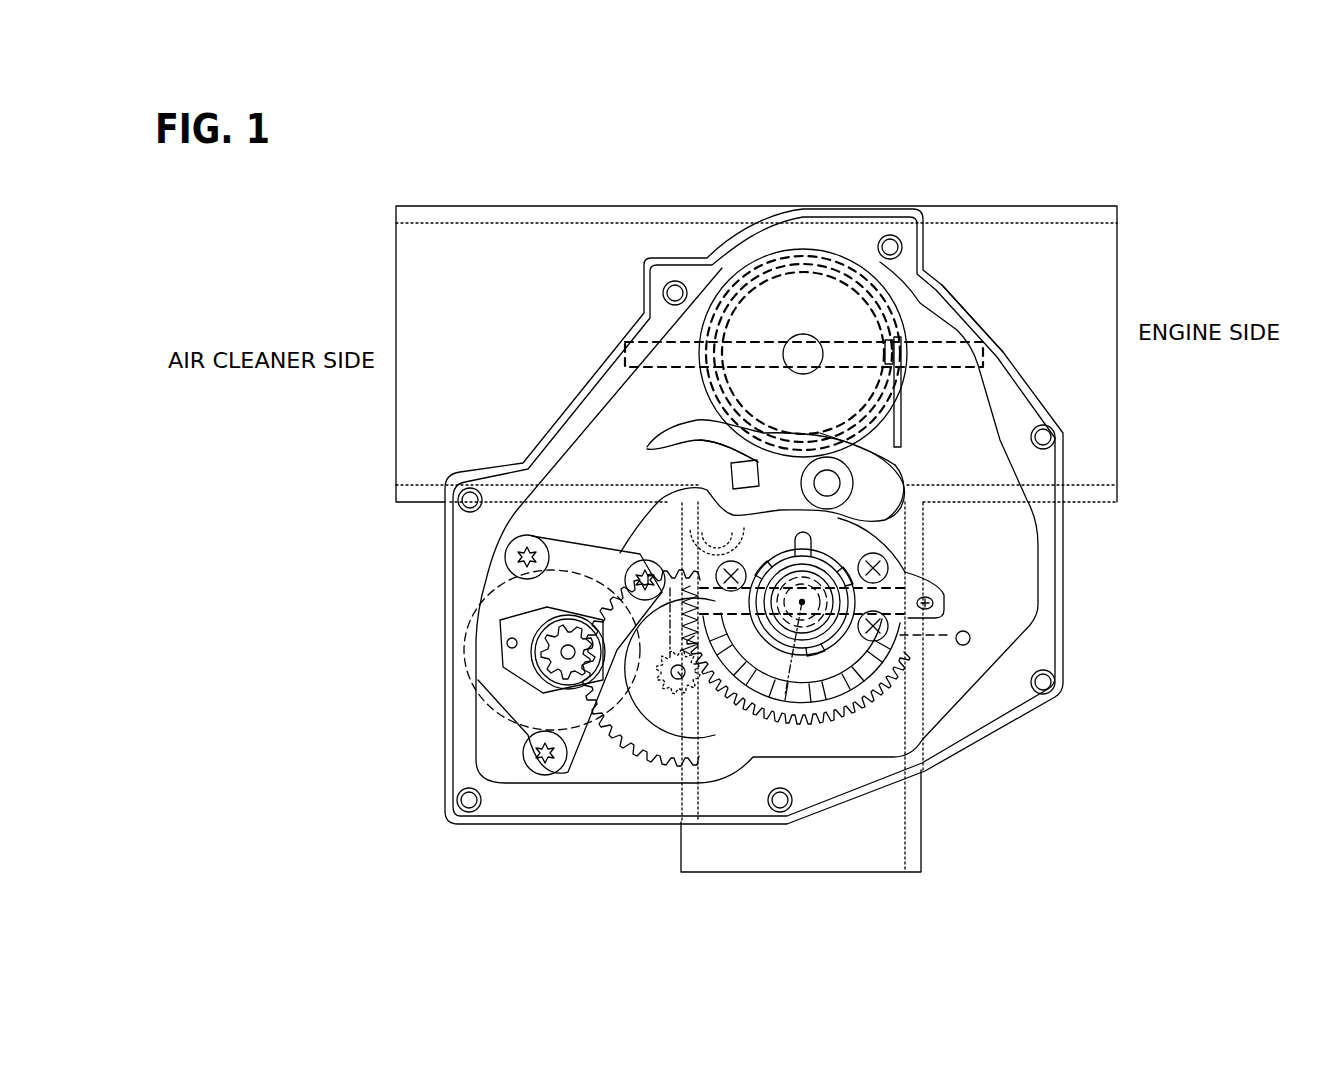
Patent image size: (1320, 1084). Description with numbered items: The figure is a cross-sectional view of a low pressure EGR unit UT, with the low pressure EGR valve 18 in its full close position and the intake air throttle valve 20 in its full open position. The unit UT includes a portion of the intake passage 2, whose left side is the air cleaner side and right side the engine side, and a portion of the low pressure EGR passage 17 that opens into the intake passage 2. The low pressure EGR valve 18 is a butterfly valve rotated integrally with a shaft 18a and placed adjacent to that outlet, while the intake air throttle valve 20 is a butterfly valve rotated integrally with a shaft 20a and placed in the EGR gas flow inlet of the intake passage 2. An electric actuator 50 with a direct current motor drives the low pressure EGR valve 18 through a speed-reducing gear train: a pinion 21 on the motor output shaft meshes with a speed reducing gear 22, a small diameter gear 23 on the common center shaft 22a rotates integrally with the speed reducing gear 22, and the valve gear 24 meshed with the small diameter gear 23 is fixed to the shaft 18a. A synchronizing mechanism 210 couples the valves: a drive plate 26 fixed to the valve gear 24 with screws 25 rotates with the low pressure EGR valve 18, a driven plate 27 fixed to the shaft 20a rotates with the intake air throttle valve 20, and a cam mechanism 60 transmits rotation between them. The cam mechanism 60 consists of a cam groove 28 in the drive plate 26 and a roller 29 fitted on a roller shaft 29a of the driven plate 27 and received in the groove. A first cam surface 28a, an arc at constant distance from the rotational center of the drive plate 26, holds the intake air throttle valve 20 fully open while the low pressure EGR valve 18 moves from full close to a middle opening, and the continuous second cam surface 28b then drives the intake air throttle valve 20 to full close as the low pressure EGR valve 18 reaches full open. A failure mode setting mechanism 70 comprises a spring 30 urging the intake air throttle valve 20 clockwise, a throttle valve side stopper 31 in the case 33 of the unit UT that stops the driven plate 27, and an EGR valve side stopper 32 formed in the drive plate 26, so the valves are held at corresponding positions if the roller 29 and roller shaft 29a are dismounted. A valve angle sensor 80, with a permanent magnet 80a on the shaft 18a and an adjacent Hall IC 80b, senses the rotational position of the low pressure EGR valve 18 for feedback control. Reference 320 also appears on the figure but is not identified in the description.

The intake passage 2 is at (442, 237).
The low pressure EGR passage 17 is at (893, 838).
The low pressure EGR valve 18 is at (945, 603).
The shaft 18a is at (805, 625).
The intake air throttle valve 20 is at (970, 340).
The shaft 20a is at (801, 352).
The pinion 21 is at (565, 650).
The speed reducing gear 22 is at (618, 740).
The center shaft 22a is at (688, 695).
The small diameter gear 23 is at (663, 677).
The valve gear 24 is at (797, 625).
The screws 25 is at (900, 580).
The drive plate 26 is at (884, 562).
The driven plate 27 is at (830, 290).
The cam groove 28 is at (789, 500).
The first cam surface 28a is at (940, 510).
The second cam surface 28b is at (722, 480).
The roller 29 is at (828, 483).
The roller shaft 29a is at (856, 500).
The spring 30 is at (932, 305).
The throttle valve side stopper 31 is at (745, 425).
The EGR valve side stopper 32 is at (698, 508).
The case 33 is at (1067, 663).
The electric actuator 50 is at (499, 712).
The cam mechanism 60 is at (883, 428).
The failure mode setting mechanism 70 is at (924, 313).
The valve angle sensor 80 is at (816, 534).
The permanent magnet 80a is at (798, 683).
The Hall IC 80b is at (822, 547).
The synchronizing mechanism 210 is at (916, 451).
The intake device 320 is at (1124, 168).
The low pressure EGR unit UT is at (898, 185).